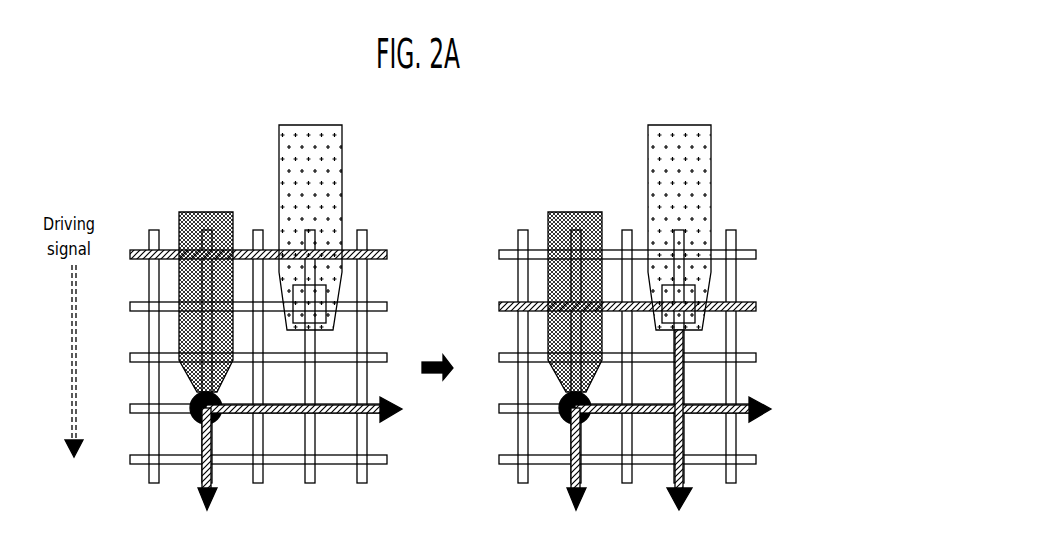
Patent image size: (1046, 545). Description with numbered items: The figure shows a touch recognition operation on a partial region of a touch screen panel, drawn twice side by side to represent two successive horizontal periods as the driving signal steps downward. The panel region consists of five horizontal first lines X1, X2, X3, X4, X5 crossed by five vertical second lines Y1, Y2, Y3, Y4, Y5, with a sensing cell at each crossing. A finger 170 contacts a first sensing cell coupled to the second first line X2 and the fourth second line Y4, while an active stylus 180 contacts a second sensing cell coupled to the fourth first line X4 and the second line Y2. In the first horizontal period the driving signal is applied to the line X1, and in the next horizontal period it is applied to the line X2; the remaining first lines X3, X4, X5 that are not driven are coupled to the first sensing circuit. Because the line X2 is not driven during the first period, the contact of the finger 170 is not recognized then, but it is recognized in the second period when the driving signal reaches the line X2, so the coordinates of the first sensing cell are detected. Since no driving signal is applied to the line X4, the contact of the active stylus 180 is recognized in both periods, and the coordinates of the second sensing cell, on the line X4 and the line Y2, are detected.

The finger 170 is at (303, 125).
The active stylus 180 is at (203, 212).
The first line X1 is at (431, 255).
The second first line X2 is at (431, 307).
The first line X3 is at (431, 358).
The fourth first line X4 is at (431, 409).
The first line X5 is at (431, 460).
The second line Y1 is at (337, 371).
The second line Y2 is at (379, 371).
The second line Y3 is at (441, 371).
The fourth second line Y4 is at (492, 371).
The second line Y5 is at (547, 371).